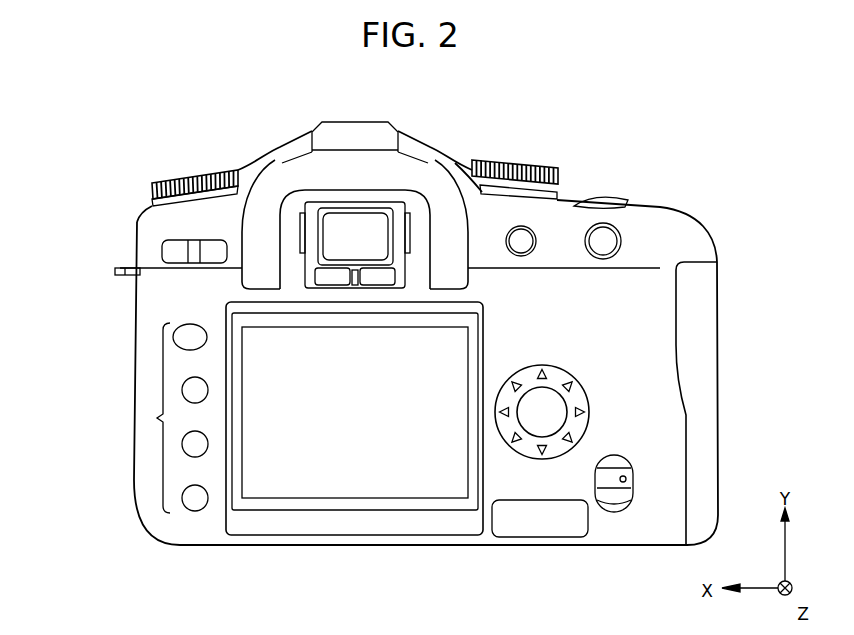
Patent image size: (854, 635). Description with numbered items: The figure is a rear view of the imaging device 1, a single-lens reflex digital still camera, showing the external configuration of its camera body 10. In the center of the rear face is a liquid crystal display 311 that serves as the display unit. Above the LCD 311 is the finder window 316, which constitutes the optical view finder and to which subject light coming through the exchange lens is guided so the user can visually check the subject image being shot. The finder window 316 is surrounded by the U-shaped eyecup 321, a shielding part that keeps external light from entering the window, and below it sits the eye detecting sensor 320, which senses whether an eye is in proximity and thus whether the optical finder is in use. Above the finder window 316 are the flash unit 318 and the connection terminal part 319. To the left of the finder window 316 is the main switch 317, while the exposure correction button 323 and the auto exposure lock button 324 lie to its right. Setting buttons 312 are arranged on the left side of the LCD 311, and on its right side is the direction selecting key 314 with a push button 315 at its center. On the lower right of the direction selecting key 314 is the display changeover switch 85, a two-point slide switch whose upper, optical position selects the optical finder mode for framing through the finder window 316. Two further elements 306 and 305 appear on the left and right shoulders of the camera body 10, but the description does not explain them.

The imaging device 1 is at (83, 103).
The camera body 10 is at (150, 166).
The display changeover switch 85 is at (610, 503).
The control dial (rear right) 305 is at (510, 165).
The mode setting dial (rear left) 306 is at (196, 180).
The liquid crystal display 311 is at (345, 487).
The setting buttons 312 is at (157, 418).
The direction selecting key 314 is at (548, 368).
The push button 315 is at (552, 408).
The finder window 316 is at (372, 232).
The main switch 317 is at (160, 252).
The flash unit 318 is at (297, 130).
The connection terminal part 319 is at (346, 120).
The eye detecting sensor 320 is at (385, 274).
The eyecup 321 is at (283, 176).
The exposure correction button 323 is at (528, 243).
The auto exposure lock button 324 is at (603, 243).